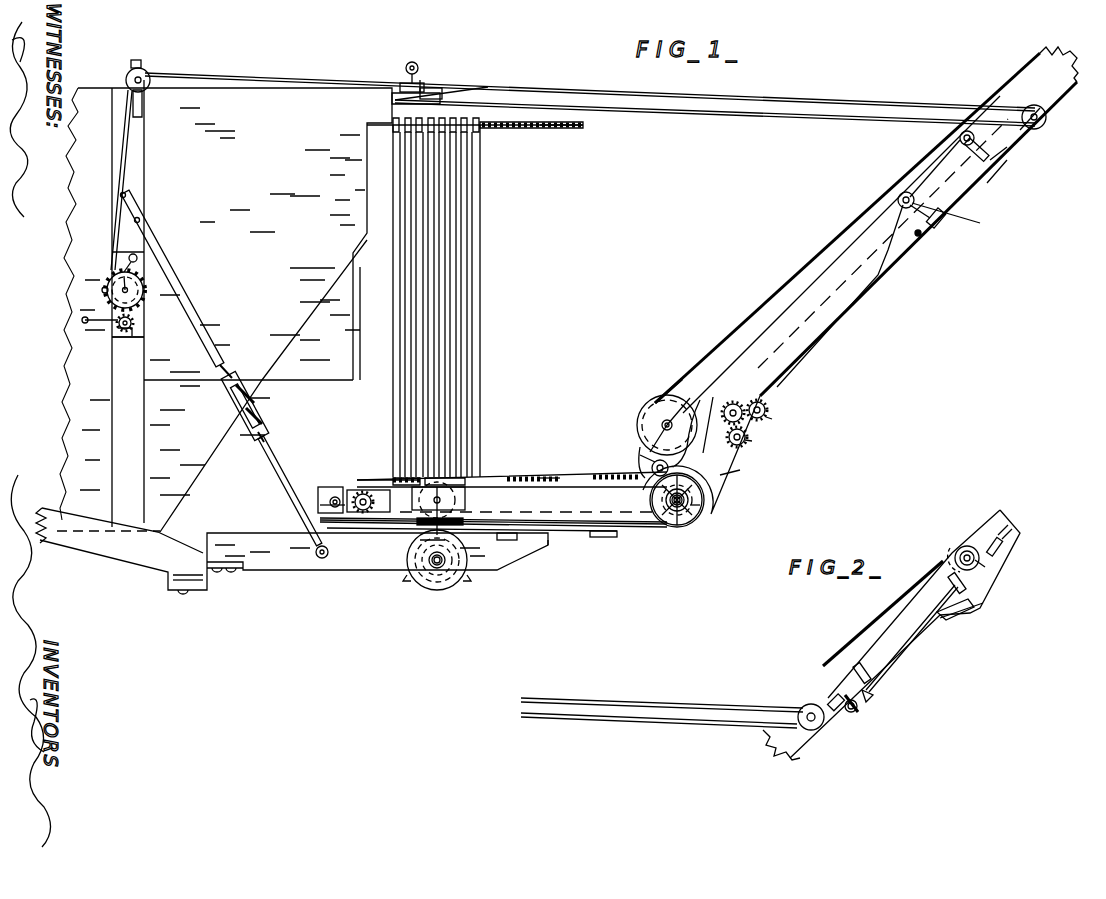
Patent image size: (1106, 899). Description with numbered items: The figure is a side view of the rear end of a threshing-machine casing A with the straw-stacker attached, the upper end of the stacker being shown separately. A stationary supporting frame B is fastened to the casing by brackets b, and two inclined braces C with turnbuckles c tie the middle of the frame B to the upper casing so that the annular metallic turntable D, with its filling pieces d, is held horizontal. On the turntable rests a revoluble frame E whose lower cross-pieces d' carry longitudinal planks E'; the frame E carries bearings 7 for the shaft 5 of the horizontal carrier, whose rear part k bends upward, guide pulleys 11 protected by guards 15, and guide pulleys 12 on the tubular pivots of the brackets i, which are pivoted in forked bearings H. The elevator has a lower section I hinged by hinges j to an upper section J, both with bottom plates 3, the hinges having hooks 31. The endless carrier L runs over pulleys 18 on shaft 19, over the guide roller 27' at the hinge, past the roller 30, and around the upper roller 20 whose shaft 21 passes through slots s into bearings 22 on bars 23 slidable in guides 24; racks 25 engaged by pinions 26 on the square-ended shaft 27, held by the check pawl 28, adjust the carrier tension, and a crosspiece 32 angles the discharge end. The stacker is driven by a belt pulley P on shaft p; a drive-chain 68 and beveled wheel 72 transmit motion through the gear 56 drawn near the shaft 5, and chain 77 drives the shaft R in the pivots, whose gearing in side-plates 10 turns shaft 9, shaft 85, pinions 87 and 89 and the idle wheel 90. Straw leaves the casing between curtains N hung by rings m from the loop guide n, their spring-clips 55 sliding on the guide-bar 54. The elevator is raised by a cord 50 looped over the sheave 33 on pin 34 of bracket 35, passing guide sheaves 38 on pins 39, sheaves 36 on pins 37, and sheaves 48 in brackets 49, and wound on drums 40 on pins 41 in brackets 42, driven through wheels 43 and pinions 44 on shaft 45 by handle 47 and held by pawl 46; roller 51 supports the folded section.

In FIG. 1, the casing of threshing-machine A is at (258, 112).
In FIG. 1, the stationary supporting frame B is at (337, 557).
In FIG. 1, the brackets b is at (205, 593).
In FIG. 1, the guide sheaves 48 is at (148, 72).
In FIG. 1, the brackets 49 is at (135, 60).
In FIG. 1, the winding drums 40 is at (126, 290).
In FIG. 1, the pins 41 is at (135, 290).
In FIG. 1, the check pawl 46 is at (131, 254).
In FIG. 1, the toothed wheels 43 is at (102, 289).
In FIG. 1, the toothed pinions 44 is at (133, 323).
In FIG. 1, the handle 47 is at (85, 321).
In FIG. 1, the shaft 45 is at (120, 330).
In FIG. 1, the brackets 42 is at (140, 340).
In FIG. 1, the inclined braces C is at (192, 326).
In FIG. 1, the turnbuckles c is at (262, 423).
In FIG. 1, the roller 51 is at (411, 62).
In FIG. 1, the pins 37 is at (400, 85).
In FIG. 1, the guide sheaves 36 is at (421, 84).
In FIG. 1, the pin 34 is at (430, 90).
In FIG. 1, the sheave 33 is at (440, 95).
In FIG. 1, the bracket 35 is at (488, 87).
In FIG. 1, the flexible connection or cord 50 is at (748, 112).
In FIG. 2, the flexible connection or cord 50 is at (683, 700).
In FIG. 1, the pins 39 is at (1028, 108).
In FIG. 2, the pins 39 is at (798, 728).
In FIG. 1, the slidable rings m is at (530, 125).
In FIG. 1, the loop-shaped guide n is at (545, 130).
In FIG. 1, the curtains N is at (455, 292).
In FIG. 1, the revoluble frame E is at (512, 434).
In FIG. 1, the longitudinal planks E' is at (508, 551).
In FIG. 1, the shaft 5 is at (333, 493).
In FIG. 1, the gear 56 is at (375, 500).
In FIG. 1, the guide-bar 54 is at (385, 480).
In FIG. 1, the spring-clips 55 is at (400, 480).
In FIG. 1, the drive-chain 68 is at (460, 513).
In FIG. 1, the beveled toothed wheel 72 is at (445, 480).
In FIG. 1, the drive-chain 77 is at (548, 480).
In FIG. 1, the guide pulleys 11 is at (648, 458).
In FIG. 1, the guards 15 is at (652, 467).
In FIG. 1, the bearings 7 is at (320, 510).
In FIG. 1, the belt pulley P is at (444, 592).
In FIG. 1, the shaft p is at (436, 568).
In FIG. 1, the filling pieces d is at (559, 572).
In FIG. 1, the cross-pieces d' is at (477, 604).
In FIG. 1, the annular metallic turntable D is at (560, 540).
In FIG. 1, the shaft 19 is at (662, 423).
In FIG. 1, the pulleys 18 is at (661, 400).
In FIG. 1, the forked bearings H is at (715, 517).
In FIG. 1, the guide pulleys 12 is at (693, 527).
In FIG. 1, the brackets i is at (690, 500).
In FIG. 1, the shaft R is at (700, 505).
In FIG. 1, the rear part of carrier k is at (720, 475).
In FIG. 1, the idle toothed wheel 90 is at (733, 404).
In FIG. 1, the shaft 85 is at (766, 411).
In FIG. 1, the toothed pinion 87 is at (764, 404).
In FIG. 1, the side-plates 10 is at (770, 417).
In FIG. 1, the toothed pinion 89 is at (747, 445).
In FIG. 1, the shaft 9 is at (750, 440).
In FIG. 1, the endless carrier L is at (796, 284).
In FIG. 2, the endless carrier L is at (888, 614).
In FIG. 1, the lower section I is at (810, 335).
In FIG. 1, the bottom plates 3 is at (800, 352).
In FIG. 2, the bottom plates 3 is at (893, 665).
In FIG. 1, the upper section J is at (1010, 148).
In FIG. 2, the upper section J is at (870, 648).
In FIG. 1, the roller 30 is at (959, 138).
In FIG. 1, the guide sheaves 38 is at (1046, 121).
In FIG. 2, the guide sheaves 38 is at (806, 707).
In FIG. 1, the guide roller 27' is at (891, 192).
In FIG. 1, the hinges j is at (948, 217).
In FIG. 1, the hooks 31 is at (925, 236).
In FIG. 2, the roller 20 is at (963, 540).
In FIG. 2, the shaft 21 is at (972, 550).
In FIG. 2, the holes or slots s is at (990, 548).
In FIG. 2, the bearings 22 is at (983, 563).
In FIG. 2, the guides 24 is at (965, 589).
In FIG. 2, the bars 23 is at (930, 622).
In FIG. 2, the crosspiece 32 is at (963, 615).
In FIG. 2, the toothed pinions 26 is at (859, 712).
In FIG. 2, the toothed racks 25 is at (840, 710).
In FIG. 2, the pivoted check pawl 28 is at (870, 697).
In FIG. 2, the shaft 27 is at (875, 733).